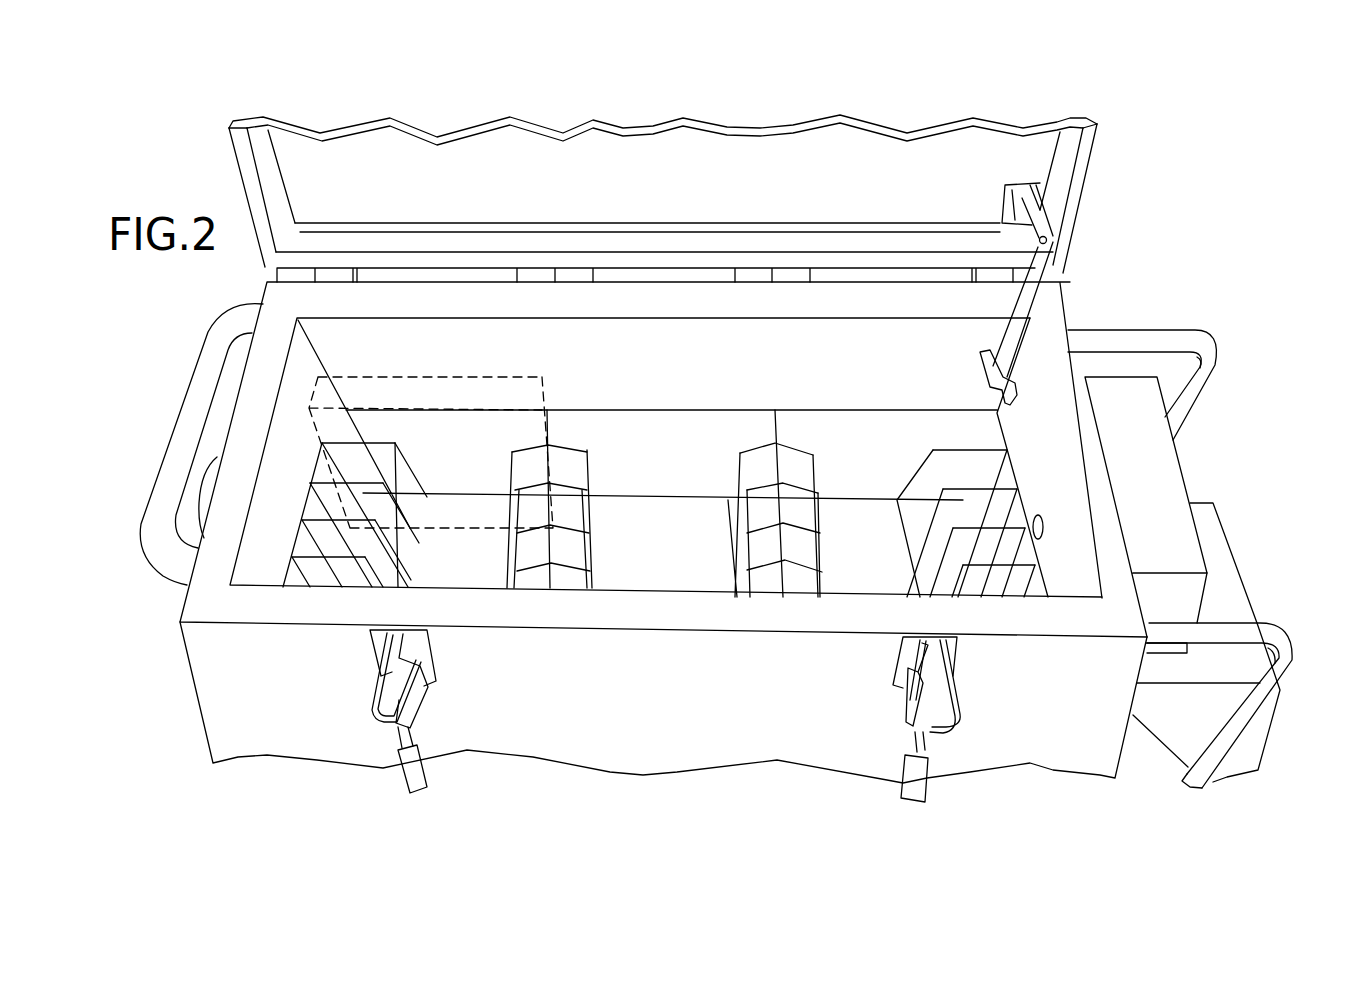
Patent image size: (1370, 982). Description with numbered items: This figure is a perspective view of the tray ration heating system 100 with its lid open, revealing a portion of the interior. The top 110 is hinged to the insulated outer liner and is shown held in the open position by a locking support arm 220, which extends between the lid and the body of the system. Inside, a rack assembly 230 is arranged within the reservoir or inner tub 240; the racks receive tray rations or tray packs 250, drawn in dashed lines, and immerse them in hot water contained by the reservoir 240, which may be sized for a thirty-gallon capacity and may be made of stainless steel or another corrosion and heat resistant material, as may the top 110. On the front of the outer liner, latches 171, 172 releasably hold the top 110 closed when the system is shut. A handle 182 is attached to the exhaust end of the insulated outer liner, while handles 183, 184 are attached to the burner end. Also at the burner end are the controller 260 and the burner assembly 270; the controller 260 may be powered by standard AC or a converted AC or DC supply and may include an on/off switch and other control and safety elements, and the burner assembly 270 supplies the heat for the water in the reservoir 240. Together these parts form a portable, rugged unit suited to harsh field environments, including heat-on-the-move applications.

The tray ration heating system 100 is at (1223, 85).
The top 110 is at (730, 184).
The latch 171 is at (417, 793).
The latch 172 is at (917, 807).
The handle 182 is at (203, 375).
The handle 183 is at (1280, 645).
The handle 184 is at (1203, 347).
The locking support arm 220 is at (1020, 300).
The rack assembly 230 is at (650, 410).
The reservoir 240 is at (637, 560).
The tray packs 250 is at (450, 377).
The controller 260 is at (1155, 502).
The burner assembly 270 is at (1223, 592).